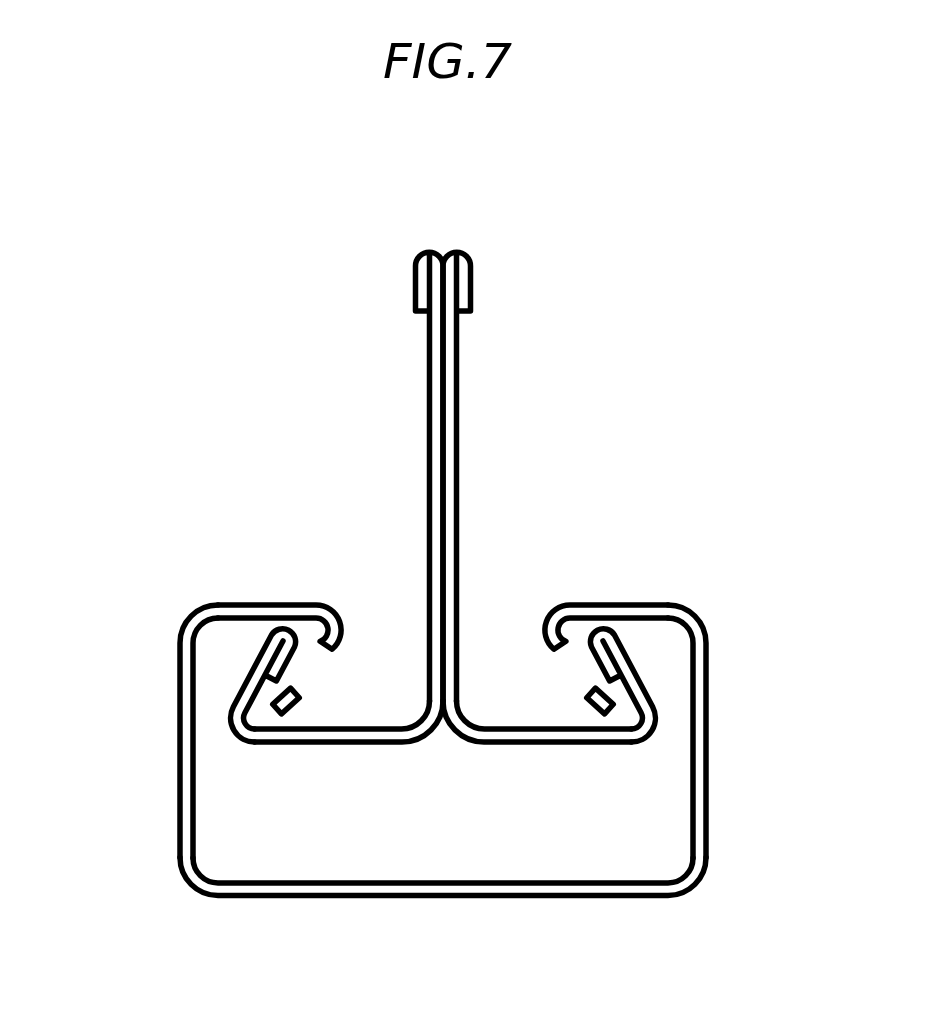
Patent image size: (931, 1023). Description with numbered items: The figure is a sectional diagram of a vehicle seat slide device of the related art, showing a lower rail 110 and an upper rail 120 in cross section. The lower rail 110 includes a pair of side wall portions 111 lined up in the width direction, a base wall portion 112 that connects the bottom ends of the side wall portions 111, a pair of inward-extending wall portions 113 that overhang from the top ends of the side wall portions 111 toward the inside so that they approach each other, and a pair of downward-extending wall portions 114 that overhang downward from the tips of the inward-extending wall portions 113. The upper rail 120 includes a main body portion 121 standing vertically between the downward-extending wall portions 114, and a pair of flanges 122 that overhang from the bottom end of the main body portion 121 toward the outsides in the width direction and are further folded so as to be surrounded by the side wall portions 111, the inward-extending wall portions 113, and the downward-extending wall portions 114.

The lower rail 110 is at (548, 897).
The side wall portions 111 is at (178, 720).
The base wall portion 112 is at (402, 898).
The inward-extending wall portions 113 is at (260, 603).
The downward-extending wall portions 114 is at (337, 645).
The upper rail 120 is at (460, 364).
The main body portion 121 is at (428, 388).
The flanges 122 is at (295, 746).